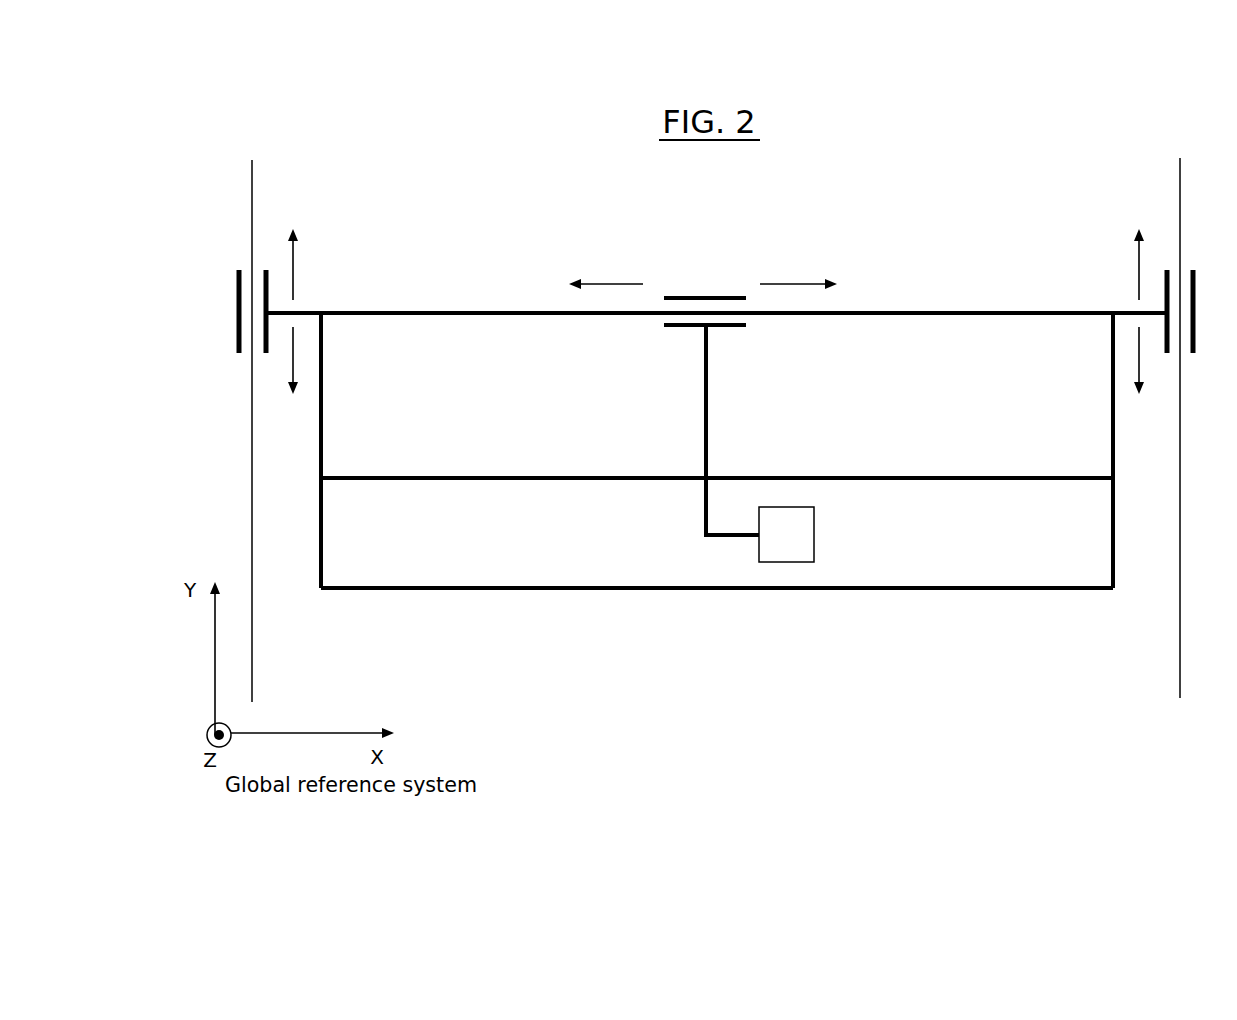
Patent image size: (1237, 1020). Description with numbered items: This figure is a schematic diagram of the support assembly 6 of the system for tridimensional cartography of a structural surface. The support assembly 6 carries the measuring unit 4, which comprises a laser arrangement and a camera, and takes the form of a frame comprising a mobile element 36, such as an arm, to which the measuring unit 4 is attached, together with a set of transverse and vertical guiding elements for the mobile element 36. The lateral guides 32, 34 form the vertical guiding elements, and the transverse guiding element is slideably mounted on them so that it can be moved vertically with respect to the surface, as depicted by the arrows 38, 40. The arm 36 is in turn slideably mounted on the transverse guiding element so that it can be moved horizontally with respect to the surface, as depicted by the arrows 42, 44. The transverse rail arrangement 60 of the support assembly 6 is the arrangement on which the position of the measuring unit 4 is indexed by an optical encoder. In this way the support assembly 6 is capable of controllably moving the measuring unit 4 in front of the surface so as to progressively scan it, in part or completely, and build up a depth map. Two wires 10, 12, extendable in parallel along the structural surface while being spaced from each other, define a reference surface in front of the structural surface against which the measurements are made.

The measuring unit 4 is at (787, 553).
The support assembly 6 is at (436, 250).
The wire 10 is at (988, 585).
The wire 12 is at (1003, 476).
The lateral guide 32 is at (252, 183).
The lateral guide 34 is at (1180, 190).
The mobile element 36 is at (706, 537).
The arrow 38 is at (293, 268).
The arrow 40 is at (292, 363).
The arrow 42 is at (610, 284).
The arrow 44 is at (788, 284).
The transverse rail arrangement 60 is at (881, 315).